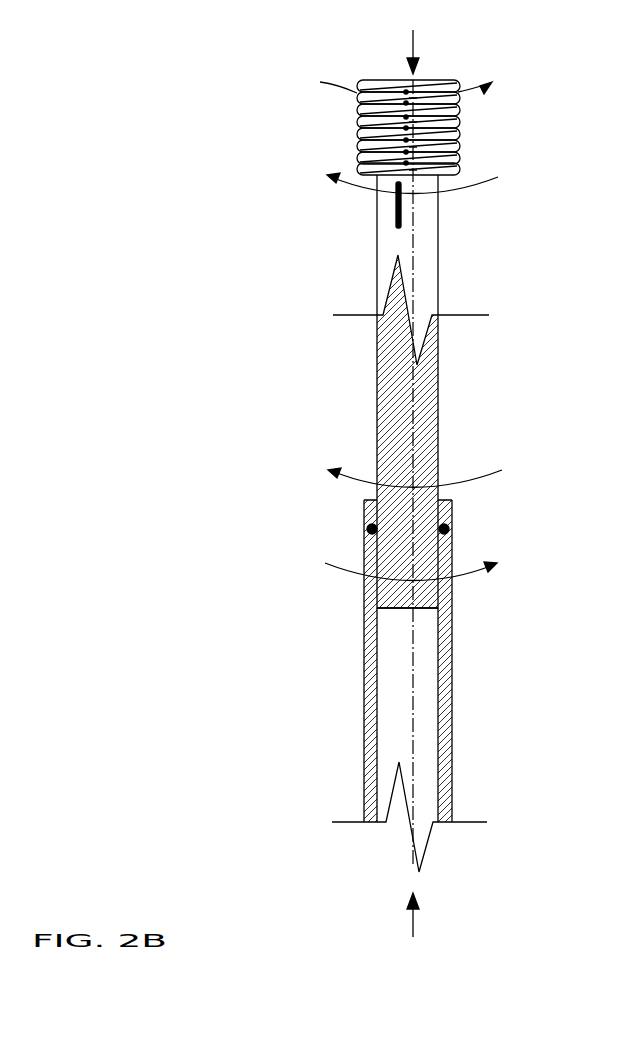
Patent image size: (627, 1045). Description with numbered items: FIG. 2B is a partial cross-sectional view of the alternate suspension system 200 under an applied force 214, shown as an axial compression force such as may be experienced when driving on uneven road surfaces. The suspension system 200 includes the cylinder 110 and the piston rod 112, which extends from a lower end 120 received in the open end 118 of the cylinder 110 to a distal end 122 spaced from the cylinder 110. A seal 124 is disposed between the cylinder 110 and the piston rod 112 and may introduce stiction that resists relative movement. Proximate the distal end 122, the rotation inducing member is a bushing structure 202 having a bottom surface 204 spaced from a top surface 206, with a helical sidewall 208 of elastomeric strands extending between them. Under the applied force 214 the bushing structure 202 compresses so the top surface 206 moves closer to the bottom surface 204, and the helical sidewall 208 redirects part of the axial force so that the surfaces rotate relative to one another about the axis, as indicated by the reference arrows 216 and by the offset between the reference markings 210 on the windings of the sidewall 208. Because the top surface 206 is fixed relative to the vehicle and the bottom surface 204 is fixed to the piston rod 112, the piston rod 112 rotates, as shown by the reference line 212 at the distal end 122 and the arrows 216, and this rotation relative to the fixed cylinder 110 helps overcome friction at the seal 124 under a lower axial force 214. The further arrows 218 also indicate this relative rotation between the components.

The suspension system 200 is at (198, 66).
The bushing structure 202 is at (514, 93).
The bottom surface 204 is at (375, 172).
The top surface 206 is at (367, 88).
The sidewall 208 is at (372, 147).
The reference markings 210 is at (458, 168).
The reference line 212 is at (392, 215).
The applied force 214 is at (413, 40).
The reference arrows 216 is at (476, 95).
The rotation arrows 218 is at (348, 570).
The cylinder 110 is at (452, 688).
The piston rod 112 is at (429, 278).
The open end 118 is at (452, 507).
The lower end 120 is at (433, 575).
The distal end 122 is at (433, 208).
The seal 124 is at (445, 530).